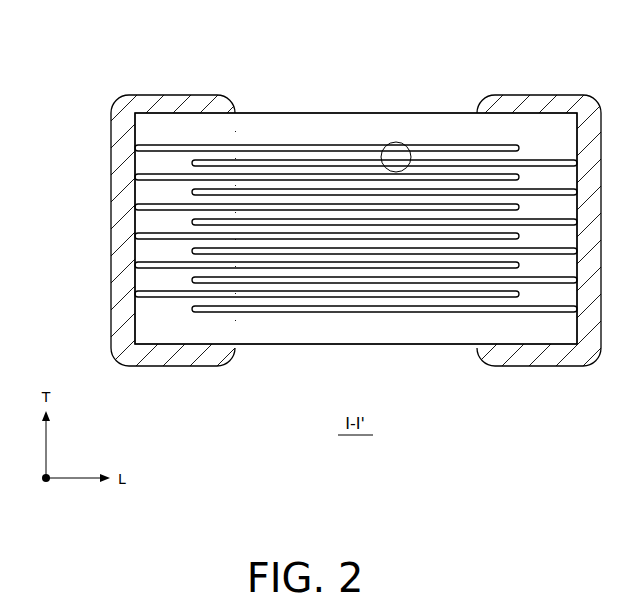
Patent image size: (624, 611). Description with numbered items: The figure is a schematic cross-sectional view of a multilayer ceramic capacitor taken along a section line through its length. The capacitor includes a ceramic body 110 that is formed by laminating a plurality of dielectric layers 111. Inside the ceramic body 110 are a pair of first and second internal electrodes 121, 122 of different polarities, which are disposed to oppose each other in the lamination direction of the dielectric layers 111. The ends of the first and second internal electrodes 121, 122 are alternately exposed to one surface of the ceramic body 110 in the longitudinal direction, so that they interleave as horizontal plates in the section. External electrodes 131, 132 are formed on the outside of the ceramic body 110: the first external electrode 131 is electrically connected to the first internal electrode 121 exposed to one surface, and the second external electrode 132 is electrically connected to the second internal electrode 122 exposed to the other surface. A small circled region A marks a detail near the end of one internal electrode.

The ceramic body 110 is at (321, 112).
The dielectric layer 111 is at (153, 165).
The first internal electrode 121 is at (167, 145).
The second internal electrode 122 is at (193, 163).
The first external electrode 131 is at (177, 99).
The second external electrode 132 is at (533, 100).
The region A is at (391, 142).